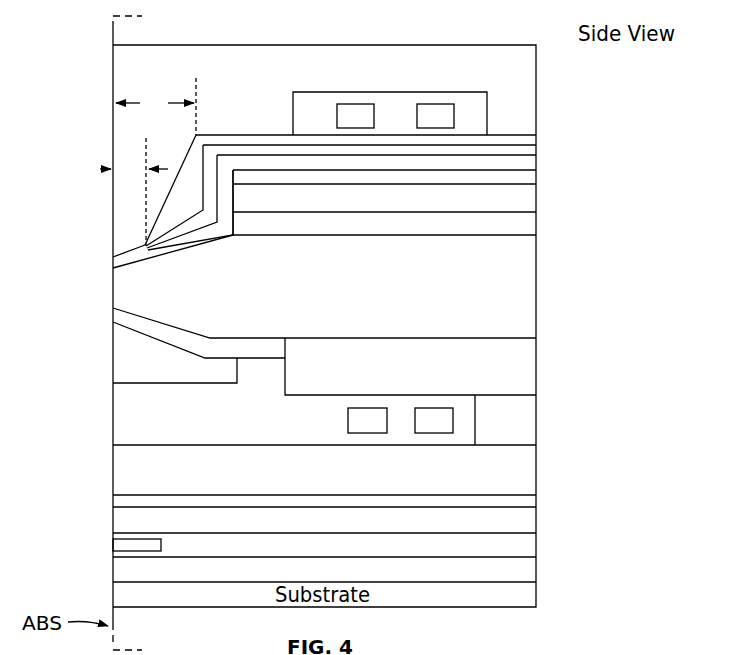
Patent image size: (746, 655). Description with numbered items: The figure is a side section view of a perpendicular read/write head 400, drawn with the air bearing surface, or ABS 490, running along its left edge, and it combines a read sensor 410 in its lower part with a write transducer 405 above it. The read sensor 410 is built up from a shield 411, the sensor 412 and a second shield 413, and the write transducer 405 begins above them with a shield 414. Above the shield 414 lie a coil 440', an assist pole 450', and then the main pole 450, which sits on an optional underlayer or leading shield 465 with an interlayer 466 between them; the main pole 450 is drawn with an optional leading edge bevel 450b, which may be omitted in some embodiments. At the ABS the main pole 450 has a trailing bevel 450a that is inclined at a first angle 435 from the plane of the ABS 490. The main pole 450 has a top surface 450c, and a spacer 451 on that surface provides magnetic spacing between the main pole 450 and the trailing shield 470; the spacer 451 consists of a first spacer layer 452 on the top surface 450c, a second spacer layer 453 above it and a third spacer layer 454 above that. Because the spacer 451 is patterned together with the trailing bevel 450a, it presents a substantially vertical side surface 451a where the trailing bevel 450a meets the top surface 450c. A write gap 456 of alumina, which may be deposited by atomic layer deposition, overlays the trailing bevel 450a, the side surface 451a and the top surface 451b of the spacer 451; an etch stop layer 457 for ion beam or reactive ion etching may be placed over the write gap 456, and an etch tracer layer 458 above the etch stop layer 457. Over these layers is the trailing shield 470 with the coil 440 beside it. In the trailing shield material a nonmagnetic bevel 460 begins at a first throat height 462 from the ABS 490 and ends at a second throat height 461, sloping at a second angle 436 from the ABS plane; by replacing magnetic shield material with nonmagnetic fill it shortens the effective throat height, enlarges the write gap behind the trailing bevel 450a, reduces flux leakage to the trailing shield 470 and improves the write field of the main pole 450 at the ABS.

The read/write head 400 is at (46, 27).
The ABS 490 is at (151, 330).
The trailing shield 470 is at (135, 72).
The first throat height 462 is at (152, 105).
The second angle 436 is at (175, 146).
The second throat height 461 is at (135, 170).
The nonmagnetic bevel 460 is at (178, 201).
The first angle 435 is at (140, 251).
The etch tracer layer 458 is at (534, 138).
The etch stop layer 457 is at (527, 149).
The write gap 456 is at (527, 164).
The third spacer layer 454 is at (538, 177).
The second spacer layer 453 is at (538, 197).
The first spacer layer 452 is at (538, 218).
The spacer 451 is at (612, 173).
The side surface 451a is at (238, 181).
The top surface of spacer 451b is at (473, 174).
The top surface 450c is at (489, 239).
The trailing bevel 450a is at (161, 259).
The leading edge bevel 450b is at (157, 317).
The main pole 450 is at (502, 291).
The interlayer 466 is at (130, 322).
The leading shield 465 is at (135, 355).
The assist pole 450' is at (456, 366).
The coil 440 is at (459, 99).
The coil 440' is at (354, 408).
The shield 414 is at (537, 473).
The shield 413 is at (110, 521).
The sensor 412 is at (110, 545).
The shield 411 is at (110, 570).
The read sensor 410 is at (566, 502).
The write transducer 405 is at (667, 53).